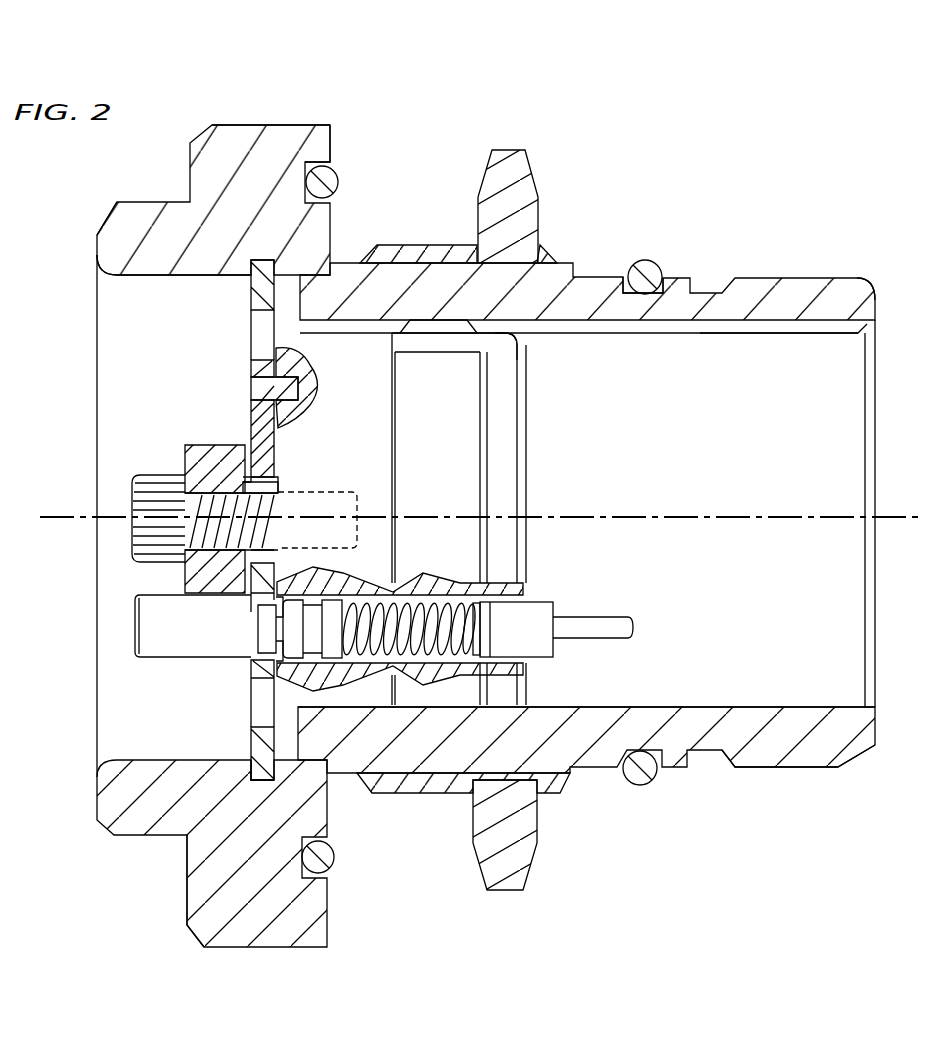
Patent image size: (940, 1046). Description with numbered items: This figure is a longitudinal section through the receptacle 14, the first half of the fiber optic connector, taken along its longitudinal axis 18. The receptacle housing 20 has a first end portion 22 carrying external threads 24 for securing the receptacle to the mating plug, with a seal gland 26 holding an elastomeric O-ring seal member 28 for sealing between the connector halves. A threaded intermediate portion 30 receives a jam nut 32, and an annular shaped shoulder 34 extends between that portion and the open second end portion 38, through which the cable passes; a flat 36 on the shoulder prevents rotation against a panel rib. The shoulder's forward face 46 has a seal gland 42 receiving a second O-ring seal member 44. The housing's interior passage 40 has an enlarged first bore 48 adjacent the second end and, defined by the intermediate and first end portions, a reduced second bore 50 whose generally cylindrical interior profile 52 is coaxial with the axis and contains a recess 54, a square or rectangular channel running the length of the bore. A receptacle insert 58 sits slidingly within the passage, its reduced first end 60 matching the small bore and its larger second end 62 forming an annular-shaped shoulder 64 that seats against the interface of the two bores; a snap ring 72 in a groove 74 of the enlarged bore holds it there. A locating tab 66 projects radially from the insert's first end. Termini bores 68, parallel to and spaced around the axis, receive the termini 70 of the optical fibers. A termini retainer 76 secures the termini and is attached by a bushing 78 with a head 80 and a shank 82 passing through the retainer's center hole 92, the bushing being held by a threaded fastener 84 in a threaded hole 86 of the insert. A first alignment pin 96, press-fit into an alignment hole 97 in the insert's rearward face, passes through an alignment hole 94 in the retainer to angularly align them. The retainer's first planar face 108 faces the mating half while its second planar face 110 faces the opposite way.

The receptacle 14 is at (72, 278).
The longitudinal axis 18 is at (775, 518).
The receptacle housing 20 is at (810, 260).
The first end portion 22 is at (857, 765).
The external threads 24 is at (762, 767).
The seal gland 26 is at (665, 285).
The seal member 28 is at (645, 260).
The threaded intermediate portion 30 is at (413, 792).
The jam nut 32 is at (508, 153).
The annular shaped shoulder 34 is at (200, 915).
The flat 36 is at (233, 125).
The second end portion 38 is at (105, 222).
The interior passage 40 is at (177, 277).
The seal gland 42 is at (329, 158).
The seal member 44 is at (338, 183).
The forward face 46 is at (328, 900).
The first bore 48 is at (117, 282).
The second bore 50 is at (805, 707).
The interior profile 52 is at (845, 336).
The recess 54 is at (785, 333).
The receptacle insert 58 is at (528, 483).
The first end 60 is at (505, 335).
The second end 62 is at (283, 312).
The annular-shaped shoulder 64 is at (277, 290).
The locating tab 66 is at (460, 322).
The termini bores 68 is at (474, 608).
The termini 70 is at (540, 657).
The snap ring 72 is at (258, 745).
The groove 74 is at (254, 780).
The termini retainer 76 is at (238, 675).
The bushing 78 is at (185, 579).
The head 80 is at (207, 452).
The shank 82 is at (278, 484).
The threaded fastener 84 is at (135, 548).
The threaded hole 86 is at (362, 533).
The center hole 92 is at (247, 482).
The alignment hole 94 is at (247, 371).
The first alignment pin 96 is at (298, 385).
The alignment hole 97 is at (302, 368).
The first planar face 108 is at (278, 459).
The second planar face 110 is at (247, 403).